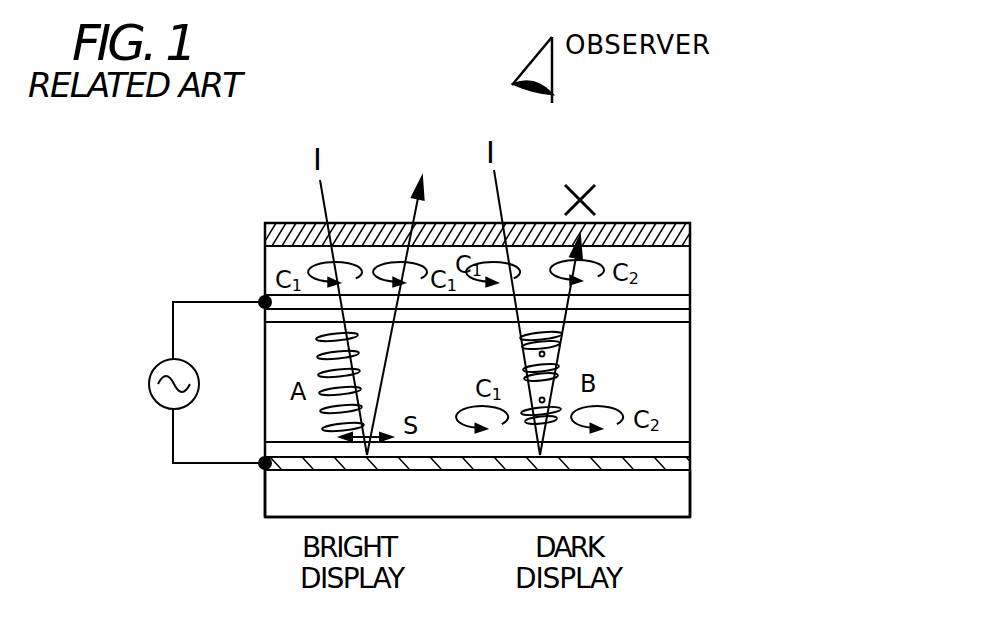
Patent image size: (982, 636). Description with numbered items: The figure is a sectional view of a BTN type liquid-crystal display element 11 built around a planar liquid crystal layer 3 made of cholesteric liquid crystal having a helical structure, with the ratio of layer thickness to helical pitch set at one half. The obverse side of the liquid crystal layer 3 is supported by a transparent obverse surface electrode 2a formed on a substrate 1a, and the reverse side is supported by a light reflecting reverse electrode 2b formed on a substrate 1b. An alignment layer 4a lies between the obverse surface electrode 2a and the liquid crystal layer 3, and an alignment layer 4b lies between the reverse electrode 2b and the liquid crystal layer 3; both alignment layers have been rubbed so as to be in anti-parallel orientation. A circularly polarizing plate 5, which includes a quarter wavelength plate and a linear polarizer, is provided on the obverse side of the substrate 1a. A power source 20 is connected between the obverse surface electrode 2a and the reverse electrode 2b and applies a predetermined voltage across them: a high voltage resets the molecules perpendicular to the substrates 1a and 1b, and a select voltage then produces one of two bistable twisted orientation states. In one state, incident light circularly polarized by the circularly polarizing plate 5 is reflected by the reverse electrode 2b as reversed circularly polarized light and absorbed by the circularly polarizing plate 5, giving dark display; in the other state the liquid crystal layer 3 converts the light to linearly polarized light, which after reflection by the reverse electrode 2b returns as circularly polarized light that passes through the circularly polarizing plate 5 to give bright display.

The liquid-crystal display element 11 is at (680, 185).
The circularly polarizing plate 5 is at (692, 233).
The substrate 1a is at (692, 265).
The transparent obverse surface electrode 2a is at (692, 297).
The alignment layer 4a is at (692, 321).
The liquid crystal layer 3 is at (692, 378).
The alignment layer 4b is at (688, 441).
The light reflecting reverse electrode 2b is at (688, 465).
The substrate 1b is at (692, 494).
The power source 20 is at (148, 384).